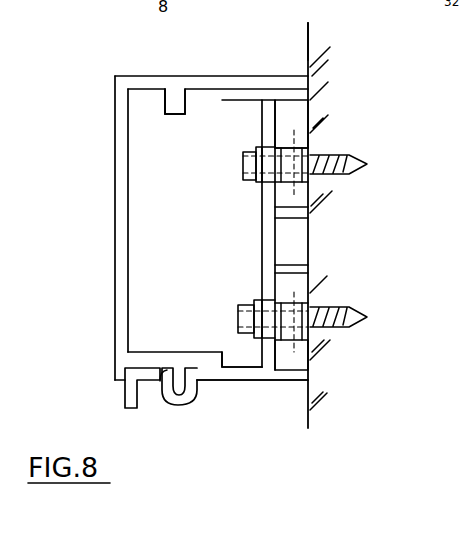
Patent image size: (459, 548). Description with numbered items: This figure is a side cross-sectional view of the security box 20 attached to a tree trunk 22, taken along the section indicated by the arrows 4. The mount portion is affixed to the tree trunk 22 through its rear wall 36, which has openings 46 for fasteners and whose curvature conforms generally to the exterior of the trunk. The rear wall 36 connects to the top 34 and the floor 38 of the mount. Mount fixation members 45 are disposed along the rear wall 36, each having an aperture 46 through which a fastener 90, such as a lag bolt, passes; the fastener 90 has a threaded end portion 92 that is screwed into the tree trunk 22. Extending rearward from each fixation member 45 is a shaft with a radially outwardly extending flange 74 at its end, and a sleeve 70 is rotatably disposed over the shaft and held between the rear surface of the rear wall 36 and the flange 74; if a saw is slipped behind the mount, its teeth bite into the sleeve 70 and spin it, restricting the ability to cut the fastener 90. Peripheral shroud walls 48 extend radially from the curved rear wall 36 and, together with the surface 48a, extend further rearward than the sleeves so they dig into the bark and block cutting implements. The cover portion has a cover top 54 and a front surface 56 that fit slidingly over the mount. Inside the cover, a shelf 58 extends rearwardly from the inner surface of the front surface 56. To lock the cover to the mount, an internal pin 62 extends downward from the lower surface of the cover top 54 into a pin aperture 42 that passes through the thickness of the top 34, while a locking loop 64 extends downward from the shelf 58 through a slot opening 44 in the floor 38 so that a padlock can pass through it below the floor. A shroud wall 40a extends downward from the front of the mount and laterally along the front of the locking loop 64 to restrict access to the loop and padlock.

The security box 20 is at (78, 128).
The tree trunk 22 is at (308, 42).
The top 34 is at (242, 101).
The rear wall 36 is at (262, 242).
The floor 38 is at (229, 374).
The shroud wall 40a is at (130, 396).
The pin aperture 42 is at (172, 100).
The slot opening 44 is at (161, 384).
The mount fixation member 45 is at (257, 150).
The opening 46 is at (260, 183).
The shroud wall 48 is at (310, 105).
The panel surface 48a is at (316, 84).
The cover top 54 is at (148, 86).
The front surface 56 is at (122, 243).
The shelf 58 is at (166, 332).
The internal pin 62 is at (177, 114).
The locking loop 64 is at (188, 398).
The sleeve 70 is at (291, 235).
The flange 74 is at (310, 183).
The fastener 90 is at (243, 168).
The threaded end portion 92 is at (344, 160).
The section line 4 is at (170, 75).